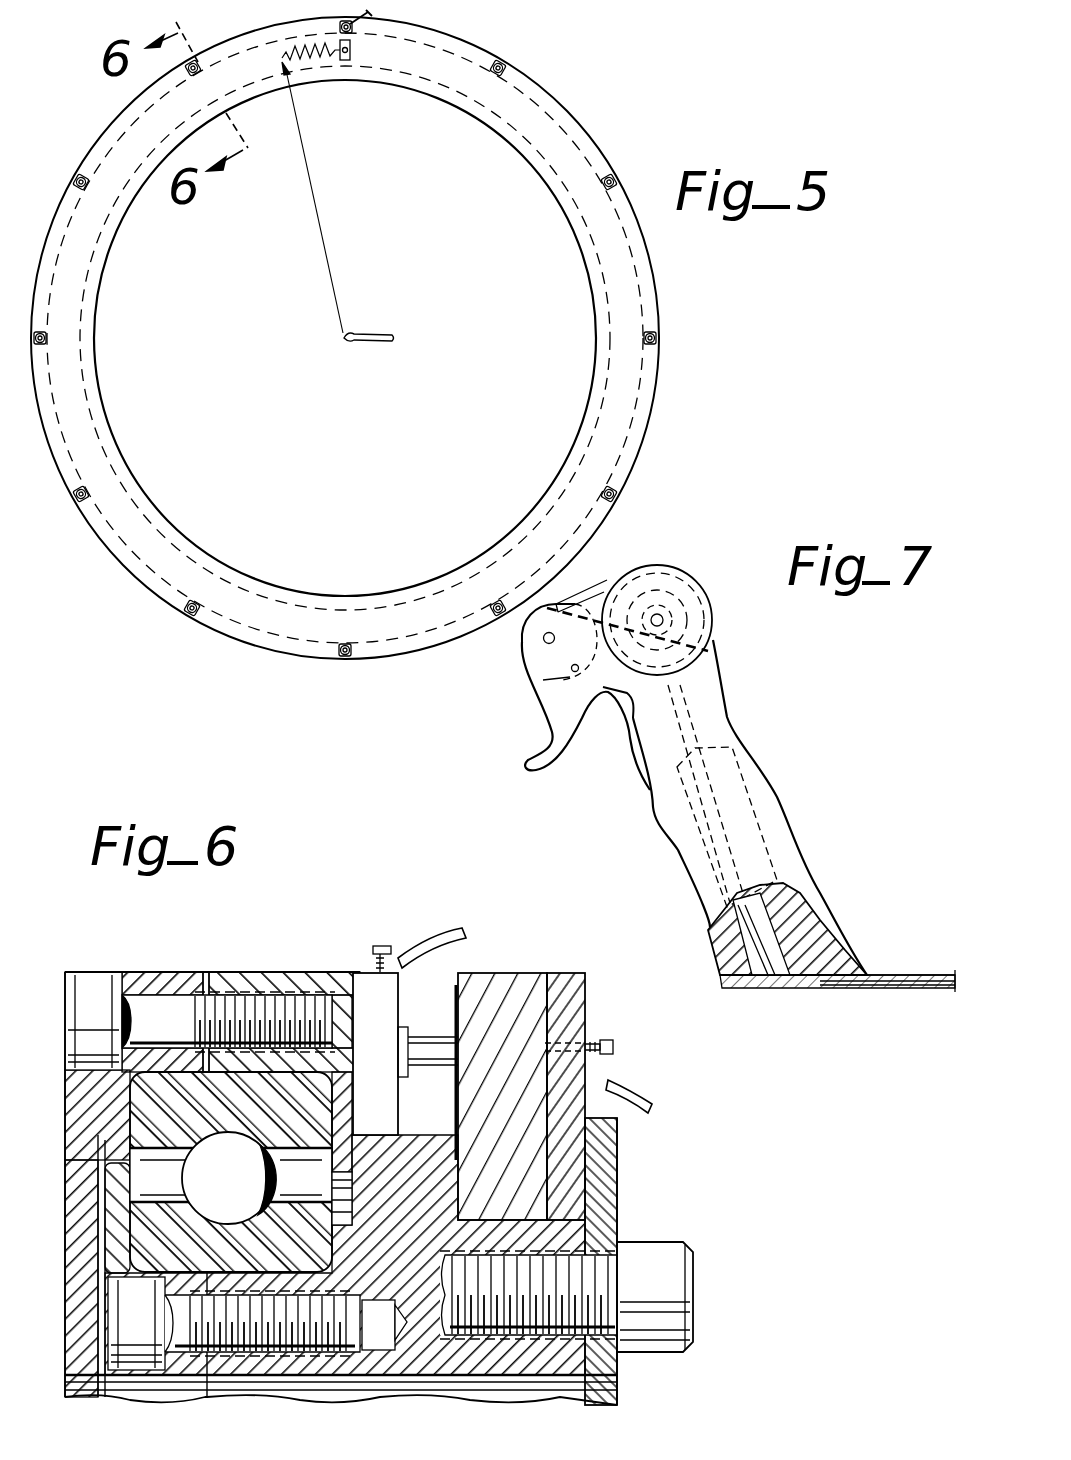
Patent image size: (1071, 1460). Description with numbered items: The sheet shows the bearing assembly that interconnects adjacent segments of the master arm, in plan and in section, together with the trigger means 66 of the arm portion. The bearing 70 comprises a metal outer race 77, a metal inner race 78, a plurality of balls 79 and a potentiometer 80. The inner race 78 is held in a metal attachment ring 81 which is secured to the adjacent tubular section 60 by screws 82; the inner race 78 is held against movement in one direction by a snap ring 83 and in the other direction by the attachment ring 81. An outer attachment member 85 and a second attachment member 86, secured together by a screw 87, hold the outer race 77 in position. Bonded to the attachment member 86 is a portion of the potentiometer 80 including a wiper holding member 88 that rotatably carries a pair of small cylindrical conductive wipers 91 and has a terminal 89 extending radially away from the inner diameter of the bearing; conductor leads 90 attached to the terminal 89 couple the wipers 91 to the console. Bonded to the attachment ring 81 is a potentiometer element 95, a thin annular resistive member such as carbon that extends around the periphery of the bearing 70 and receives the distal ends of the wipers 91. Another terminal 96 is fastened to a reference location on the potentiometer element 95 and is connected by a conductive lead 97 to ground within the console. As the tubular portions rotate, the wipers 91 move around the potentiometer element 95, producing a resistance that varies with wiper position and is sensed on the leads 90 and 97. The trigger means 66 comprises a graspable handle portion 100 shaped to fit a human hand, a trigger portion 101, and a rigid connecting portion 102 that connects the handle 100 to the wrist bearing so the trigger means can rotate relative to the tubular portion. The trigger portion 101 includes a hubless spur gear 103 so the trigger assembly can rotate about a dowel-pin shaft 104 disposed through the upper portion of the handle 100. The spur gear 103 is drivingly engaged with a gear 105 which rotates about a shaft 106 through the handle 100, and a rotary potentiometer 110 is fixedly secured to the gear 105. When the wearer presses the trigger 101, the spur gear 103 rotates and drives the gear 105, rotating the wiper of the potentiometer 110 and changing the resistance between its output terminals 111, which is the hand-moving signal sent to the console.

In FIG. 6, the tubular section 60 is at (618, 1178).
In FIG. 7, the trigger means 66 is at (743, 708).
In FIG. 6, the bearing 70 is at (210, 968).
In FIG. 6, the outer race 77 is at (318, 1128).
In FIG. 6, the inner race 78 is at (312, 1222).
In FIG. 6, the balls 79 is at (231, 1178).
In FIG. 6, the potentiometer 80 is at (428, 1005).
In FIG. 6, the attachment ring 81 is at (433, 1232).
In FIG. 6, the screws 82 is at (566, 1297).
In FIG. 6, the snap ring 83 is at (110, 1198).
In FIG. 6, the outer attachment member 85 is at (158, 985).
In FIG. 6, the second attachment member 86 is at (292, 982).
In FIG. 6, the screw 87 is at (88, 983).
In FIG. 6, the wiper holding member 88 is at (375, 1054).
In FIG. 6, the terminal 89 is at (381, 948).
In FIG. 5, the conductor leads 90 is at (362, 334).
In FIG. 6, the conductor leads 90 is at (405, 958).
In FIG. 5, the wipers 91 is at (315, 205).
In FIG. 6, the wipers 91 is at (432, 1062).
In FIG. 5, the potentiometer element 95 is at (312, 62).
In FIG. 6, the potentiometer element 95 is at (530, 983).
In FIG. 5, the terminal 96 is at (350, 54).
In FIG. 6, the terminal 96 is at (600, 1046).
In FIG. 5, the conductive lead 97 is at (364, 17).
In FIG. 6, the conductive lead 97 is at (628, 1090).
In FIG. 7, the handle portion 100 is at (758, 772).
In FIG. 7, the trigger portion 101 is at (538, 750).
In FIG. 7, the rigid connecting portion 102 is at (898, 975).
In FIG. 7, the hubless spur gear 103 is at (607, 580).
In FIG. 7, the dowel-pin shaft 104 is at (544, 640).
In FIG. 7, the gear 105 is at (694, 582).
In FIG. 7, the shaft 106 is at (664, 618).
In FIG. 7, the rotary potentiometer 110 is at (712, 646).
In FIG. 7, the output terminals 111 is at (770, 905).